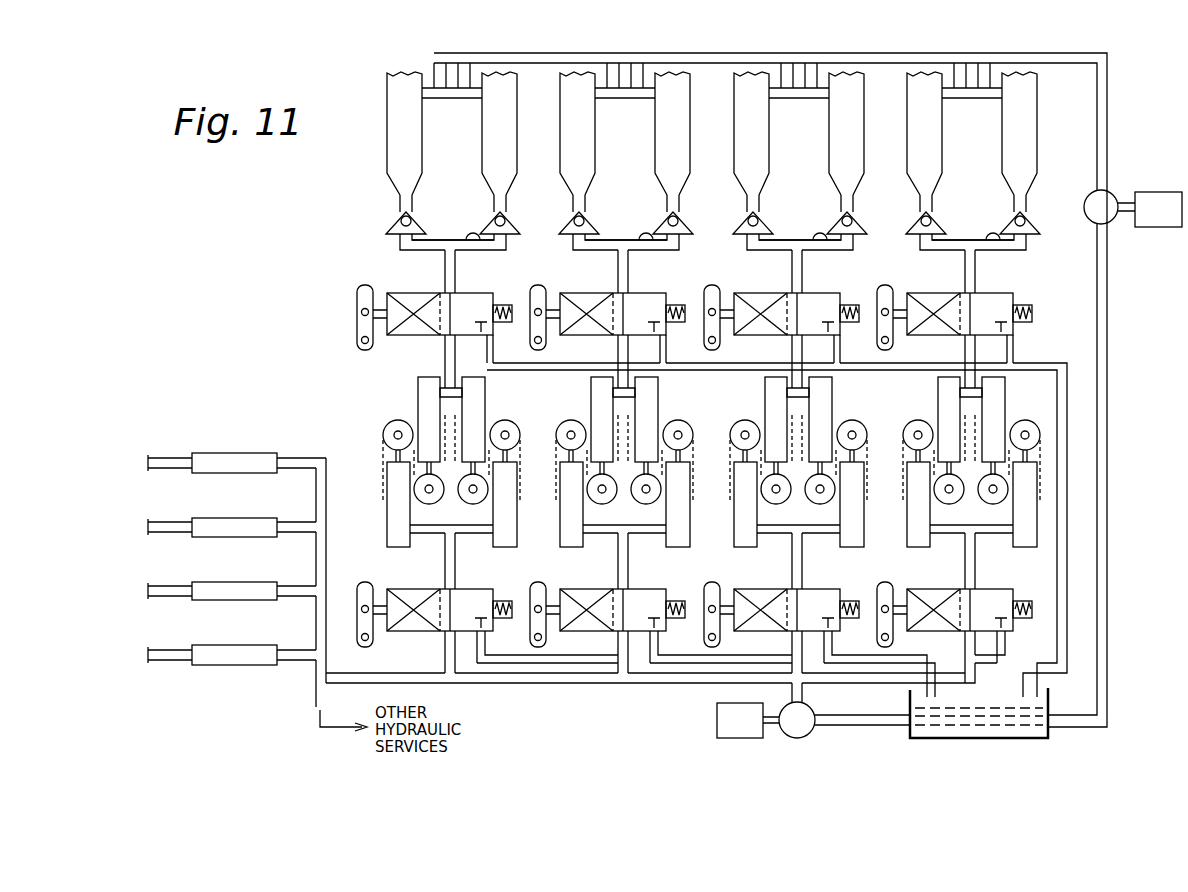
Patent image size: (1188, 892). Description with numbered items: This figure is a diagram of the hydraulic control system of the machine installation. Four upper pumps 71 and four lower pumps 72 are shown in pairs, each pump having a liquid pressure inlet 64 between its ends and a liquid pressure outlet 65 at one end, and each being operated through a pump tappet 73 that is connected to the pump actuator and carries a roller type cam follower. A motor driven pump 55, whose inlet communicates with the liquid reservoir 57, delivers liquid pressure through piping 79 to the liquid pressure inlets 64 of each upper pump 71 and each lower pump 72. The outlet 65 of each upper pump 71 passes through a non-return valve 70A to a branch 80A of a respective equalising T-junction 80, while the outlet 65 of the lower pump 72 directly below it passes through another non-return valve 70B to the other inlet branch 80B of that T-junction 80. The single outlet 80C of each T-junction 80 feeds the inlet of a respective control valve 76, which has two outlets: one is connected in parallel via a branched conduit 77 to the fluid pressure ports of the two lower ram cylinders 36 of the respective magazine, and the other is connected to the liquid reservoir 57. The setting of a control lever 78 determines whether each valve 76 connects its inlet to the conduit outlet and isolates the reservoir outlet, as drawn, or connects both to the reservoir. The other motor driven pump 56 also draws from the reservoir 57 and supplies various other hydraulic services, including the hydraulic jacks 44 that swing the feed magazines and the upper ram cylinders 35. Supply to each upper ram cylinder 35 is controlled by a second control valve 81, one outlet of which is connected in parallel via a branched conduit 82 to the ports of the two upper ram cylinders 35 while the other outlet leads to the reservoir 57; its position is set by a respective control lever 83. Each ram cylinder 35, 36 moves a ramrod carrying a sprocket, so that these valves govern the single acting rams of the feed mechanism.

The ram cylinder 35 is at (706, 483).
The ram cylinder 36 is at (706, 440).
The hydraulic jack 44 is at (226, 645).
The motor driven pump 55 is at (1113, 195).
The motor driven pump 56 is at (808, 733).
The liquid reservoir 57 is at (1044, 733).
The liquid pressure inlet 64 is at (705, 65).
The liquid pressure outlet 65 is at (1025, 206).
The non-return valve 70A is at (904, 231).
The non-return valve 70B is at (742, 211).
The upper pump 71 is at (595, 132).
The lower pump 72 is at (655, 160).
The pump tappet 73 is at (357, 318).
The control valve 76 is at (702, 327).
The branched conduit 77 is at (697, 398).
The control lever 78 is at (696, 320).
The piping 79 is at (1107, 95).
The equalising T-junction 80 is at (725, 247).
The branch 80A is at (713, 221).
The inlet branch 80B is at (765, 252).
The single outlet 80C is at (737, 271).
The second control valve 81 is at (702, 590).
The branched conduit 82 is at (711, 557).
The control lever 83 is at (616, 597).